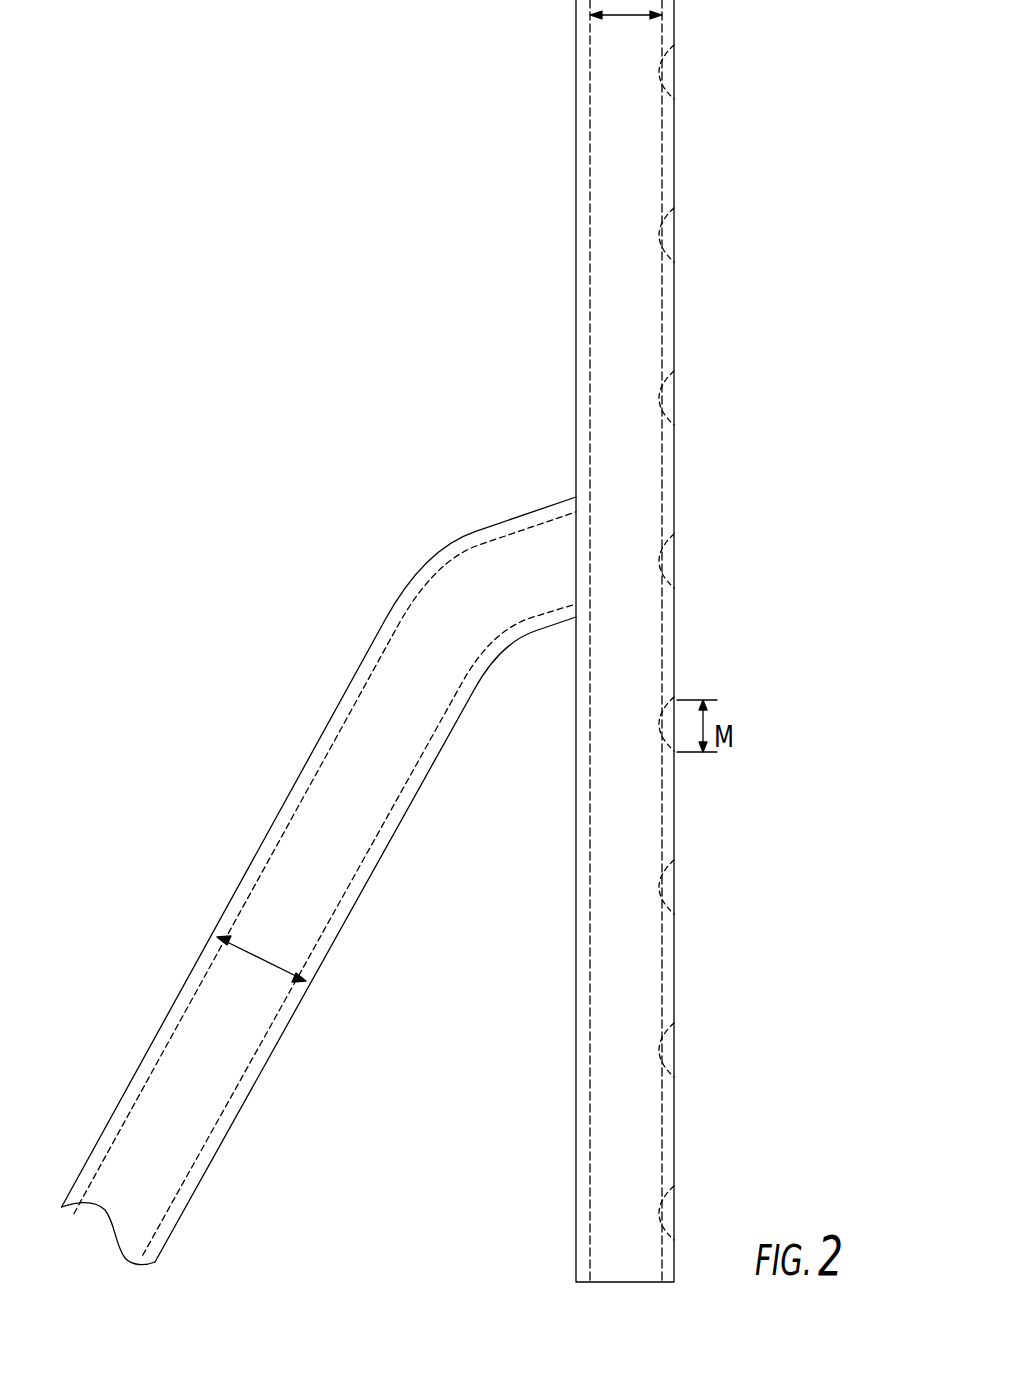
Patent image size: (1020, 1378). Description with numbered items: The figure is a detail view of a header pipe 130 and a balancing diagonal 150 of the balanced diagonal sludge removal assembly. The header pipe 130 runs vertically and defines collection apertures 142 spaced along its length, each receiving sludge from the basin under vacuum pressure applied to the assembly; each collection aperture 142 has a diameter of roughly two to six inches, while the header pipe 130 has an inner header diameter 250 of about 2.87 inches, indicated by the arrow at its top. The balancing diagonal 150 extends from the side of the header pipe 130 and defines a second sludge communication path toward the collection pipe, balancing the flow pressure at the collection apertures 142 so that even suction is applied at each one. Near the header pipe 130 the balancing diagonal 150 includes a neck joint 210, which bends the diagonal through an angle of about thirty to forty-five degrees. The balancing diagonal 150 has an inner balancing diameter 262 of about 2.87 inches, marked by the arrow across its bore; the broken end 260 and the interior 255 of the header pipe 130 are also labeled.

The header pipe 130 is at (576, 178).
The collection aperture 142 is at (672, 562).
The balancing diagonal 150 is at (292, 787).
The neck joint 210 is at (548, 627).
The inner header diameter 250 is at (623, 15).
The lumen of main tube 255 is at (627, 969).
The branch tube end 260 is at (142, 1188).
The inner balancing diameter 262 is at (260, 958).